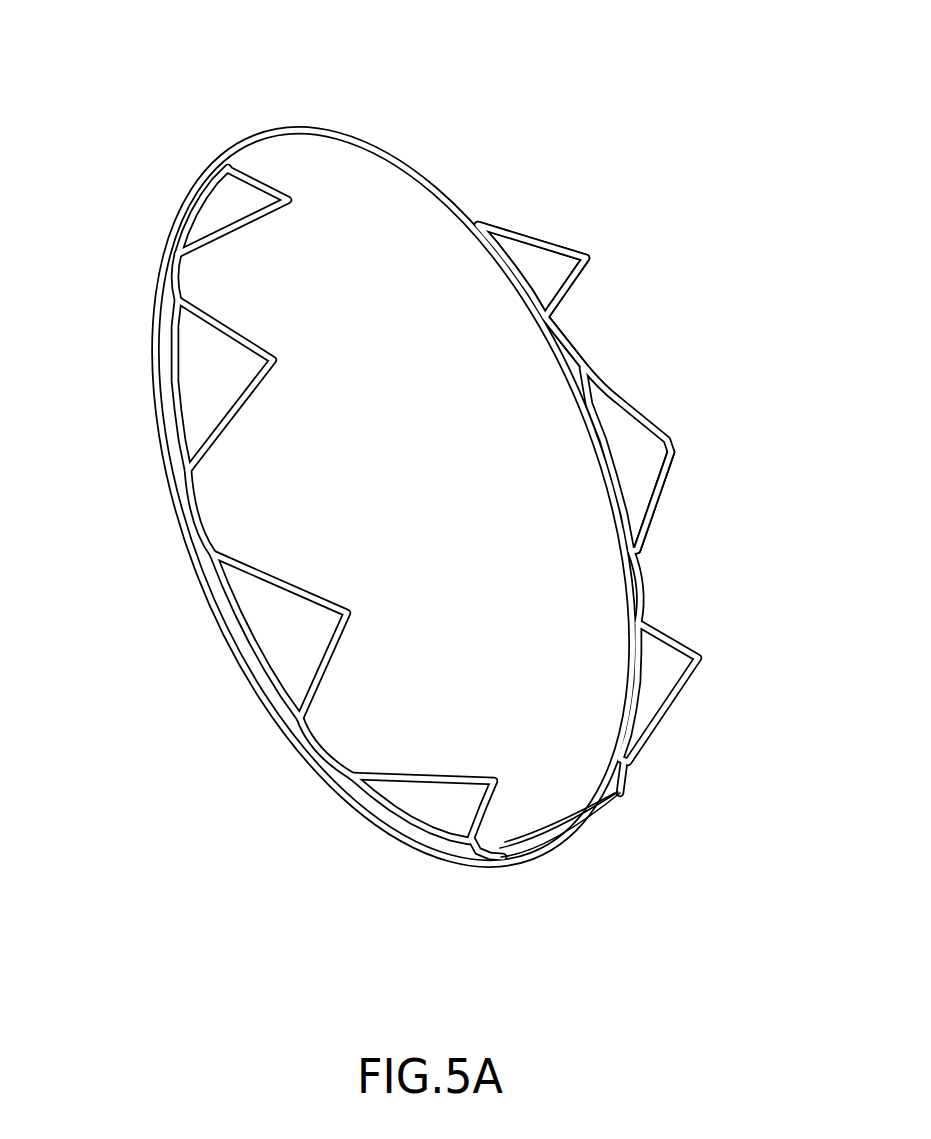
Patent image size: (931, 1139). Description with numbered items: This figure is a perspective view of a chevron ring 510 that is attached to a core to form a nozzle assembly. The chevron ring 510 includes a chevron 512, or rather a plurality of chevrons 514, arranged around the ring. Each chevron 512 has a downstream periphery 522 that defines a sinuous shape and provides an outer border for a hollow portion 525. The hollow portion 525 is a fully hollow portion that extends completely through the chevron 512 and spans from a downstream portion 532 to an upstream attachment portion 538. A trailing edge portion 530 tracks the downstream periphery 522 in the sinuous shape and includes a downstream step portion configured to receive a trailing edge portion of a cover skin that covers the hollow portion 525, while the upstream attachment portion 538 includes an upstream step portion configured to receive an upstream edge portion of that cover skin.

The chevron ring 510 is at (170, 122).
The chevron 512 is at (537, 226).
The plurality of chevrons 514 is at (660, 412).
The downstream periphery 522 is at (667, 495).
The hollow portion 525 is at (546, 266).
The trailing edge portion 530 is at (590, 262).
The downstream portion 532 is at (660, 515).
The upstream attachment portion 538 is at (548, 340).